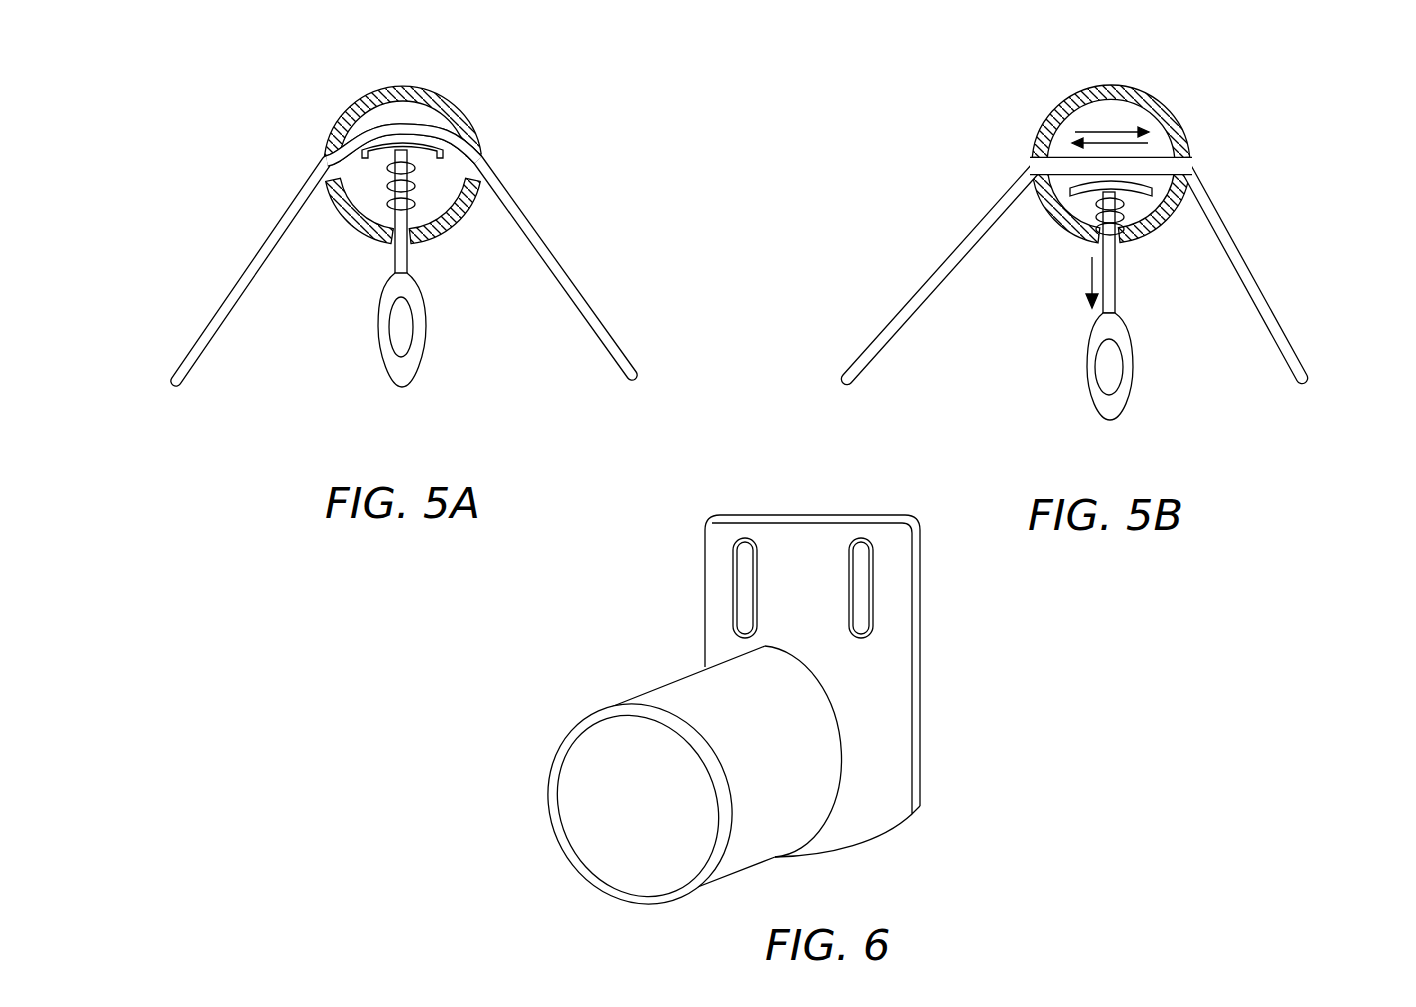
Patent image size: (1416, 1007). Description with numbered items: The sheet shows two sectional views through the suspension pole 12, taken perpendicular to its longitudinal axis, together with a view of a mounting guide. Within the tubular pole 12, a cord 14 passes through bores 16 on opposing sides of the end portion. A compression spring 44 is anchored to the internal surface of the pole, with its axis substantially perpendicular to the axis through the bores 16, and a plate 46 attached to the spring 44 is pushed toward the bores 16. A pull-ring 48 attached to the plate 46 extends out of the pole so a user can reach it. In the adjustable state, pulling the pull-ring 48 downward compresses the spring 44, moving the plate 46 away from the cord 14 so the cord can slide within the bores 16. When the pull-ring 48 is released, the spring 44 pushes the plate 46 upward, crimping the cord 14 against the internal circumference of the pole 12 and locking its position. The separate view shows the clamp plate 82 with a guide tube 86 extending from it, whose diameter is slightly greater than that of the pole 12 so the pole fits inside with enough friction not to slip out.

In FIG. 5A, the suspension pole 12 is at (337, 116).
In FIG. 5B, the suspension pole 12 is at (1048, 116).
In FIG. 5A, the cord 14 is at (248, 270).
In FIG. 5B, the cord 14 is at (1277, 310).
In FIG. 5A, the bores 16 is at (320, 153).
In FIG. 5B, the bores 16 is at (1144, 166).
In FIG. 5A, the compression spring 44 is at (413, 177).
In FIG. 5B, the compression spring 44 is at (1100, 222).
In FIG. 5A, the plate 46 is at (430, 145).
In FIG. 5B, the plate 46 is at (1076, 196).
In FIG. 5A, the pull-ring 48 is at (411, 297).
In FIG. 5B, the pull-ring 48 is at (1098, 330).
In FIG. 6, the plate 82 is at (880, 657).
In FIG. 6, the guide tube 86 is at (815, 758).